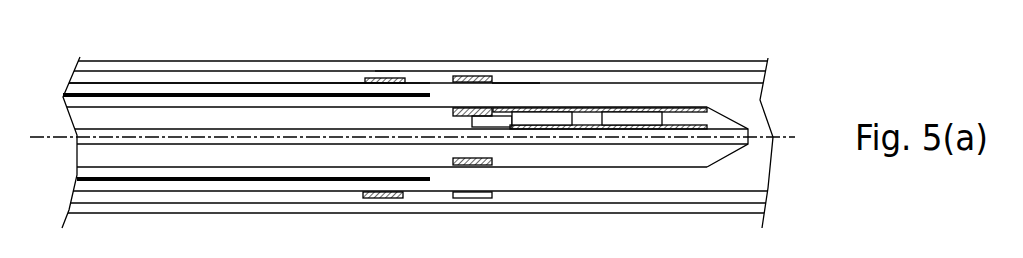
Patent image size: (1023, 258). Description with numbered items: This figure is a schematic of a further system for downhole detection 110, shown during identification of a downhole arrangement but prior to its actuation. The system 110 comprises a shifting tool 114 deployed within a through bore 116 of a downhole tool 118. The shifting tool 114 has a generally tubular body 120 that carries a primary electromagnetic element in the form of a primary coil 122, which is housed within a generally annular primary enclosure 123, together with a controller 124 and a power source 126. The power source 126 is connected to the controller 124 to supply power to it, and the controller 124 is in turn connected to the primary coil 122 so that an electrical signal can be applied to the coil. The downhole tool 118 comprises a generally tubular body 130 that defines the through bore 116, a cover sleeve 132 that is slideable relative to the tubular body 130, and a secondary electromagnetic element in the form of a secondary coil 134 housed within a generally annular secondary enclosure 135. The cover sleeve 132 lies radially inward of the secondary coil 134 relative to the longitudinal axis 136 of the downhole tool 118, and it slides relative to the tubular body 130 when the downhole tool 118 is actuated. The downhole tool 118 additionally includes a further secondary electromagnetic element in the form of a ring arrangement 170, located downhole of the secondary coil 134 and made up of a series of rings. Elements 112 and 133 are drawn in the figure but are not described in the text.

The system for downhole detection 110 is at (292, 215).
The outer wall layer 112 is at (135, 214).
The shifting tool 114 is at (725, 106).
The through bore 116 is at (750, 190).
The downhole tool 118 is at (190, 78).
The tubular body 120 is at (657, 153).
The primary coil 122 is at (477, 115).
The primary enclosure 123 is at (493, 164).
The controller 124 is at (566, 118).
The power source 126 is at (636, 118).
The tubular body 130 is at (215, 79).
The cover sleeve 132 is at (257, 91).
The gap region 133 is at (388, 74).
The secondary coil 134 is at (372, 77).
The secondary enclosure 135 is at (365, 80).
The longitudinal axis 136 is at (44, 131).
The ring arrangement 170 is at (497, 80).